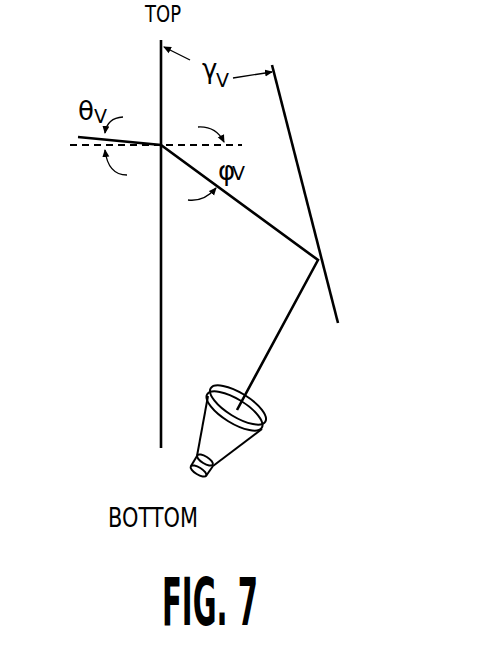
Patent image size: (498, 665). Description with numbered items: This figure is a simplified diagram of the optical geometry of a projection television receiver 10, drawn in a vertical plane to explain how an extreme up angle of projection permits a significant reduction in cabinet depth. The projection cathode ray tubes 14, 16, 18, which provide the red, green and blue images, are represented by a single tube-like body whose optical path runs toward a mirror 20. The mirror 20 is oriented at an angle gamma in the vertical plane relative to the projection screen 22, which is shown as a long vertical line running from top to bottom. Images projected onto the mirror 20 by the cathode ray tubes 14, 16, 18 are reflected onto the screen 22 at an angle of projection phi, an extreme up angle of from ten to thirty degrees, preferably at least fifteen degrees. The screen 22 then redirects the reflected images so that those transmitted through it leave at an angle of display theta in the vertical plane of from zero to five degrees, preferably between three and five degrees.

The projection television receiver 10 is at (412, 379).
The projection cathode ray tube 14 is at (282, 445).
The projection cathode ray tube 16 is at (282, 445).
The projection cathode ray tube 18 is at (228, 448).
The mirror 20 is at (302, 173).
The projection screen 22 is at (161, 368).